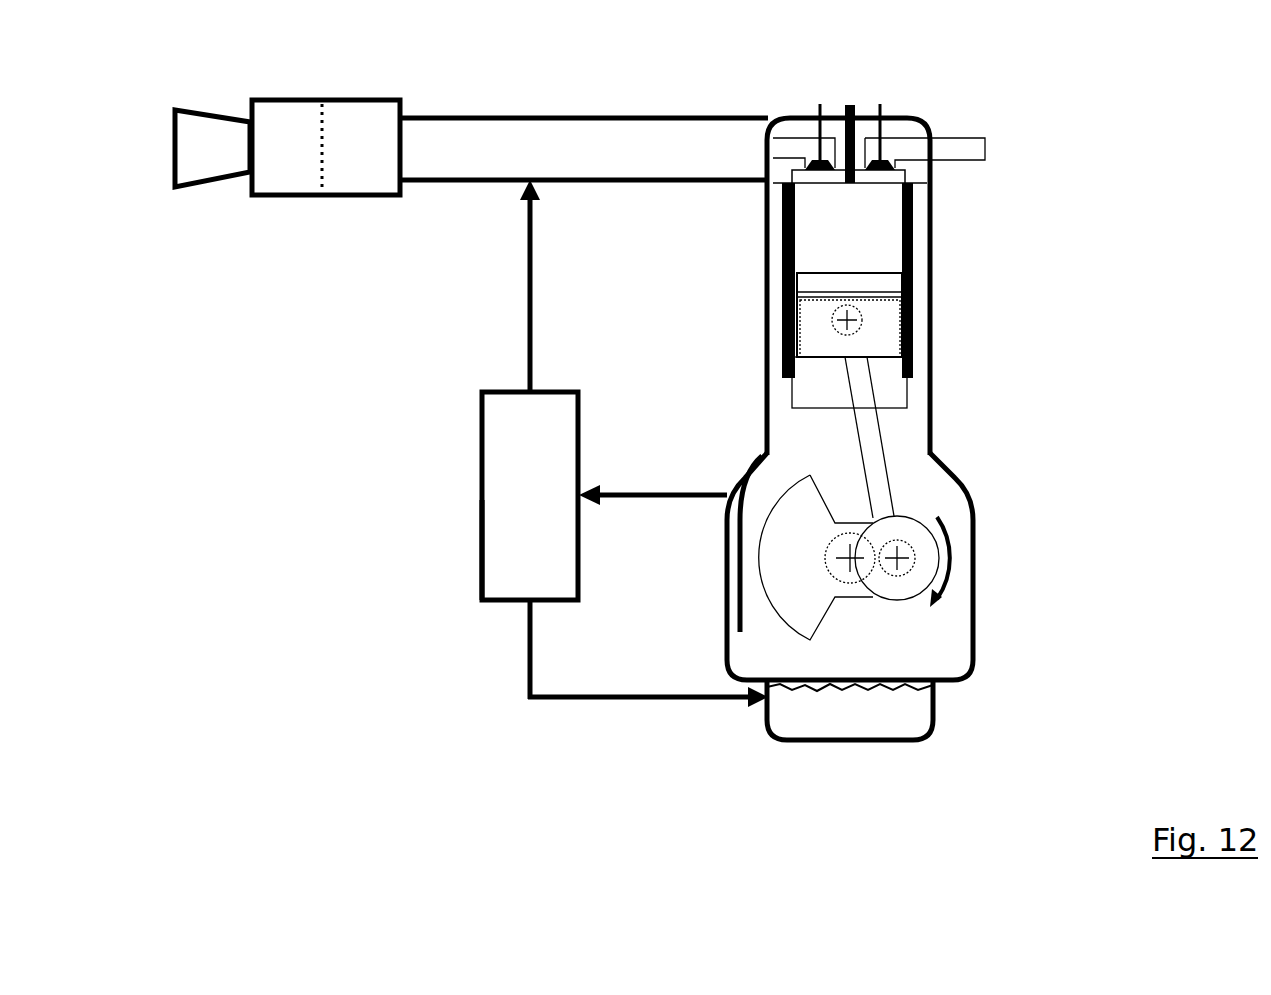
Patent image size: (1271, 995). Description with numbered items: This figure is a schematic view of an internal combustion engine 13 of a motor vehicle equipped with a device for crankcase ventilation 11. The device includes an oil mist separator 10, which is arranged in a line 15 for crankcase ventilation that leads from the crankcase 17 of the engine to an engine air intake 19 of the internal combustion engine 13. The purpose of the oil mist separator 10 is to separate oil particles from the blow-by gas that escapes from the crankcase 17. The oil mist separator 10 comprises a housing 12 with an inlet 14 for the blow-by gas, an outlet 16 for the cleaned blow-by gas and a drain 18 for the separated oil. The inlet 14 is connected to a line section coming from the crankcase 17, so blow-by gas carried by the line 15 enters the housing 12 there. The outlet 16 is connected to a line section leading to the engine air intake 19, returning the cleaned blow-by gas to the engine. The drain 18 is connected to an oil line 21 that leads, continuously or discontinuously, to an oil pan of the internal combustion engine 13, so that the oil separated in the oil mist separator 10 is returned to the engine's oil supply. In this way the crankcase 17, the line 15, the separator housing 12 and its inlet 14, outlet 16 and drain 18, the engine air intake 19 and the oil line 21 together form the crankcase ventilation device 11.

The oil mist separator 10 is at (470, 457).
The device for crankcase ventilation 11 is at (452, 358).
The housing 12 is at (480, 546).
The internal combustion engine 13 is at (970, 468).
The inlet 14 is at (585, 483).
The line for crankcase ventilation 15 is at (668, 492).
The outlet 16 is at (532, 390).
The crankcase 17 is at (745, 478).
The drain 18 is at (527, 613).
The engine air intake 19 is at (490, 113).
The oil line 21 is at (637, 704).